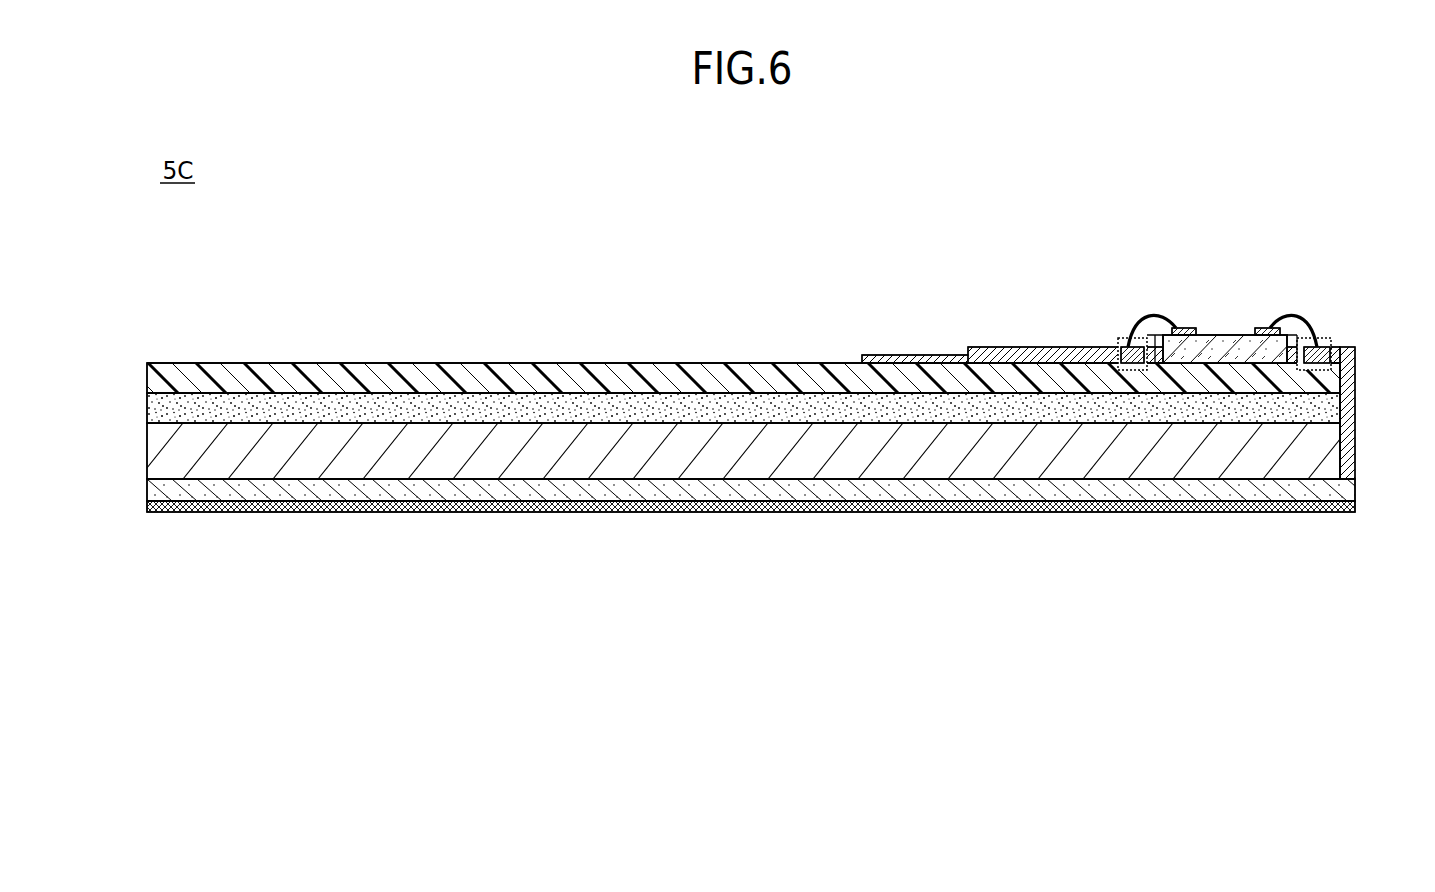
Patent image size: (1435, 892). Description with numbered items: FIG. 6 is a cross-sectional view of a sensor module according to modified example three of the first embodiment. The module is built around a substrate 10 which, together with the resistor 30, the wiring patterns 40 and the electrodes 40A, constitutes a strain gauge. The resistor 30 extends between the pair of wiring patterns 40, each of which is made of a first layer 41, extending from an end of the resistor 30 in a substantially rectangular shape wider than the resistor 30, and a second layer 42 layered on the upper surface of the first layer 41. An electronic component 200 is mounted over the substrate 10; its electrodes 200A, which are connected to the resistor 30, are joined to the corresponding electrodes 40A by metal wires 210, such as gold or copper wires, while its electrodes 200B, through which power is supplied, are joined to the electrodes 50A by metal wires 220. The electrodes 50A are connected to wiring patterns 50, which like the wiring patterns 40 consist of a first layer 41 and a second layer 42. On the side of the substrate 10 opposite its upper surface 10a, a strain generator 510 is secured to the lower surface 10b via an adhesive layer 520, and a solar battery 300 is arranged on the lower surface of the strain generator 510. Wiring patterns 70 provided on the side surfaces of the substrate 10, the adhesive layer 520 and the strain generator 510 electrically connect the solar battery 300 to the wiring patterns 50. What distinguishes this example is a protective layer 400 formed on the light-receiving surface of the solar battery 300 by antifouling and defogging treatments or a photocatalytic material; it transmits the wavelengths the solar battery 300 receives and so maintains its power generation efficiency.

The substrate 10 is at (160, 371).
The first main surface of substrate 10a is at (183, 364).
The lower surface of the substrate 10b is at (180, 395).
The resistor 30 is at (862, 338).
The wiring patterns 40 is at (1072, 570).
The electrodes 40A is at (1120, 338).
The first layer 41 is at (1147, 365).
The second layer 42 is at (1055, 388).
The wiring patterns 50 is at (1340, 570).
The electrodes 50A is at (1328, 338).
The wiring patterns 70 is at (1356, 360).
The electronic component 200 is at (1223, 340).
The electrodes 200A is at (1187, 328).
The electrodes 200B is at (1262, 328).
The metal wire 210 is at (1162, 318).
The metal wire 220 is at (1291, 318).
The solar battery 300 is at (810, 490).
The protective layer 400 is at (728, 507).
The strain generator 510 is at (1123, 470).
The adhesive layer 520 is at (1190, 398).